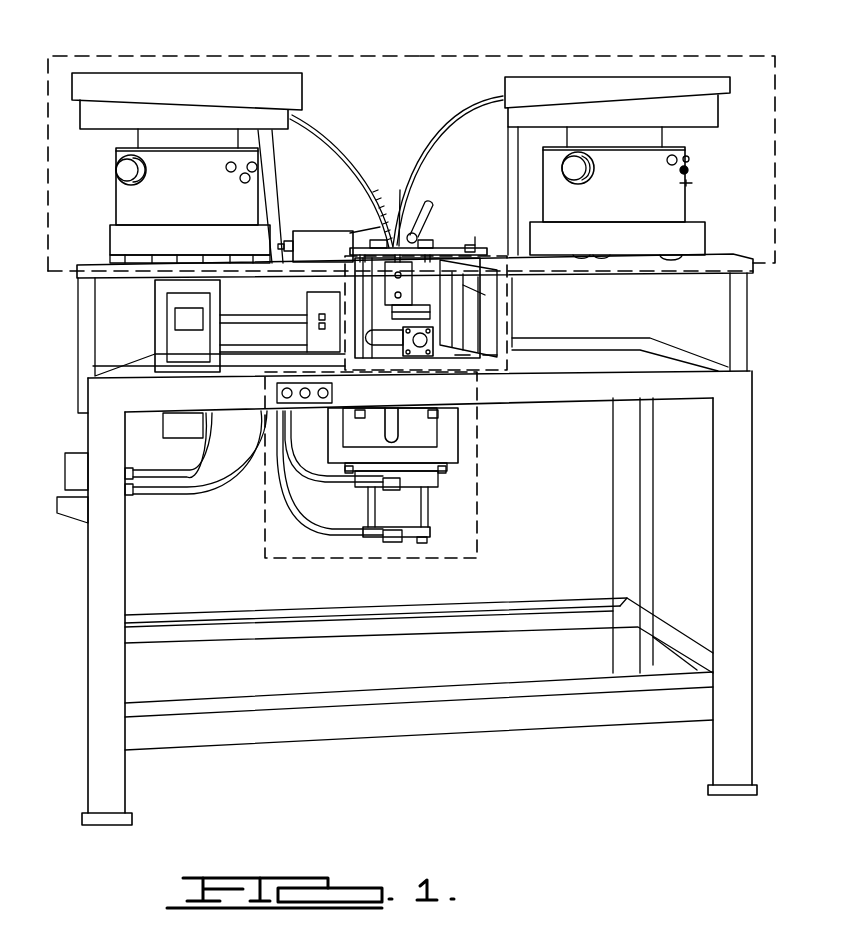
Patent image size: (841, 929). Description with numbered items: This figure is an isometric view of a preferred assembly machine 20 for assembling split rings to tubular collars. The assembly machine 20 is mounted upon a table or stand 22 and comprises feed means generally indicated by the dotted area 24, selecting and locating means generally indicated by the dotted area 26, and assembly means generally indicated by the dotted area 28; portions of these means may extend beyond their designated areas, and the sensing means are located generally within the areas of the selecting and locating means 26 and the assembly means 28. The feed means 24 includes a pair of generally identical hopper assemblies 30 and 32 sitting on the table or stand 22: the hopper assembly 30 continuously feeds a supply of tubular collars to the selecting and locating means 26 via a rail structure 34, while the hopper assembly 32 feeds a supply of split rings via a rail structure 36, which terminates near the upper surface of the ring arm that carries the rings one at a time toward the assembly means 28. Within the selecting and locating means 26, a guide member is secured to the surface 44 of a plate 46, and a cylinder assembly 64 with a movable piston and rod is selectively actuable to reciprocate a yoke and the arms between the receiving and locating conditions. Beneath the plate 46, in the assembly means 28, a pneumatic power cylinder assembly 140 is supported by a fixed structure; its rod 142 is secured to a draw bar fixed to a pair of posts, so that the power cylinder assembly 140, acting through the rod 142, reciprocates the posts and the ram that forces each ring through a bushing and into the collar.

The assembly machine 20 is at (584, 142).
The table or stand 22 is at (88, 638).
The feed means 24 is at (234, 141).
The selecting and locating means 26 is at (462, 334).
The assembly means 28 is at (347, 465).
The hopper assembly 30 is at (667, 197).
The hopper assembly 32 is at (130, 204).
The rail structure 34 is at (462, 114).
The rail structure 36 is at (336, 150).
The surface of plate 44 is at (462, 360).
The plate 46 is at (490, 360).
The cylinder assembly 64 is at (418, 352).
The pneumatic power cylinder assembly 140 is at (417, 510).
The rod 142 is at (400, 428).